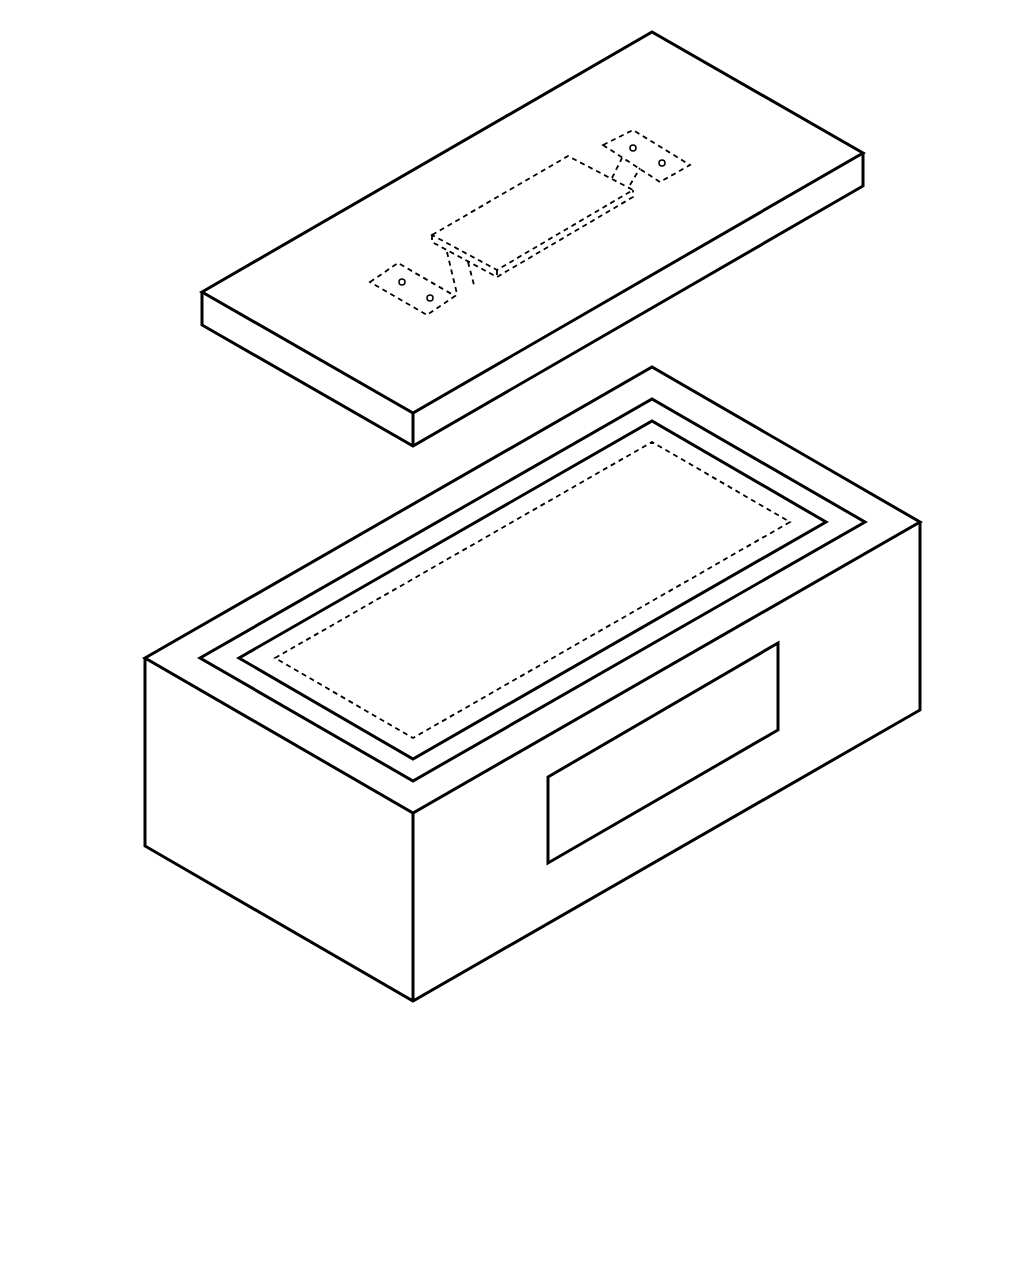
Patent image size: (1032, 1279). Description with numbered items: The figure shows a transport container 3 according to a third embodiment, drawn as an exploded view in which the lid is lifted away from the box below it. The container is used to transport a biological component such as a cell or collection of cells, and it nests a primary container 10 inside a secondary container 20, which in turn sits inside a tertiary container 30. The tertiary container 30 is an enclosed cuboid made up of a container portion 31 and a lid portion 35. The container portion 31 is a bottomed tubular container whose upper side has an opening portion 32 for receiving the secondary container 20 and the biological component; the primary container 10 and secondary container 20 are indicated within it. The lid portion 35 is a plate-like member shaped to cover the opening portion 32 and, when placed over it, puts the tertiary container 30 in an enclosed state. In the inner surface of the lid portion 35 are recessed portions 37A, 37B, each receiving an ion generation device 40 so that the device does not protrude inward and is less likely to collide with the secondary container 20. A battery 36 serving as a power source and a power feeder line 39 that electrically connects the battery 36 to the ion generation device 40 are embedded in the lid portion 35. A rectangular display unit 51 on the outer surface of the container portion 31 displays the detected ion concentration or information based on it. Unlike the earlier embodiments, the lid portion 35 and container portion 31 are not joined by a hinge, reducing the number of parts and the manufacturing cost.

The transport container 3 is at (48, 105).
The primary container 10 is at (777, 490).
The secondary container 20 is at (705, 460).
The tertiary container 30 is at (773, 277).
The container portion 31 is at (680, 395).
The opening portion 32 is at (348, 668).
The lid portion 35 is at (697, 268).
The battery 36 is at (510, 192).
The recessed portion 37A is at (370, 284).
The recessed portion 37B is at (690, 165).
The power feeder line 39 is at (640, 185).
The ion generation device 40 is at (643, 130).
The display unit 51 is at (778, 690).